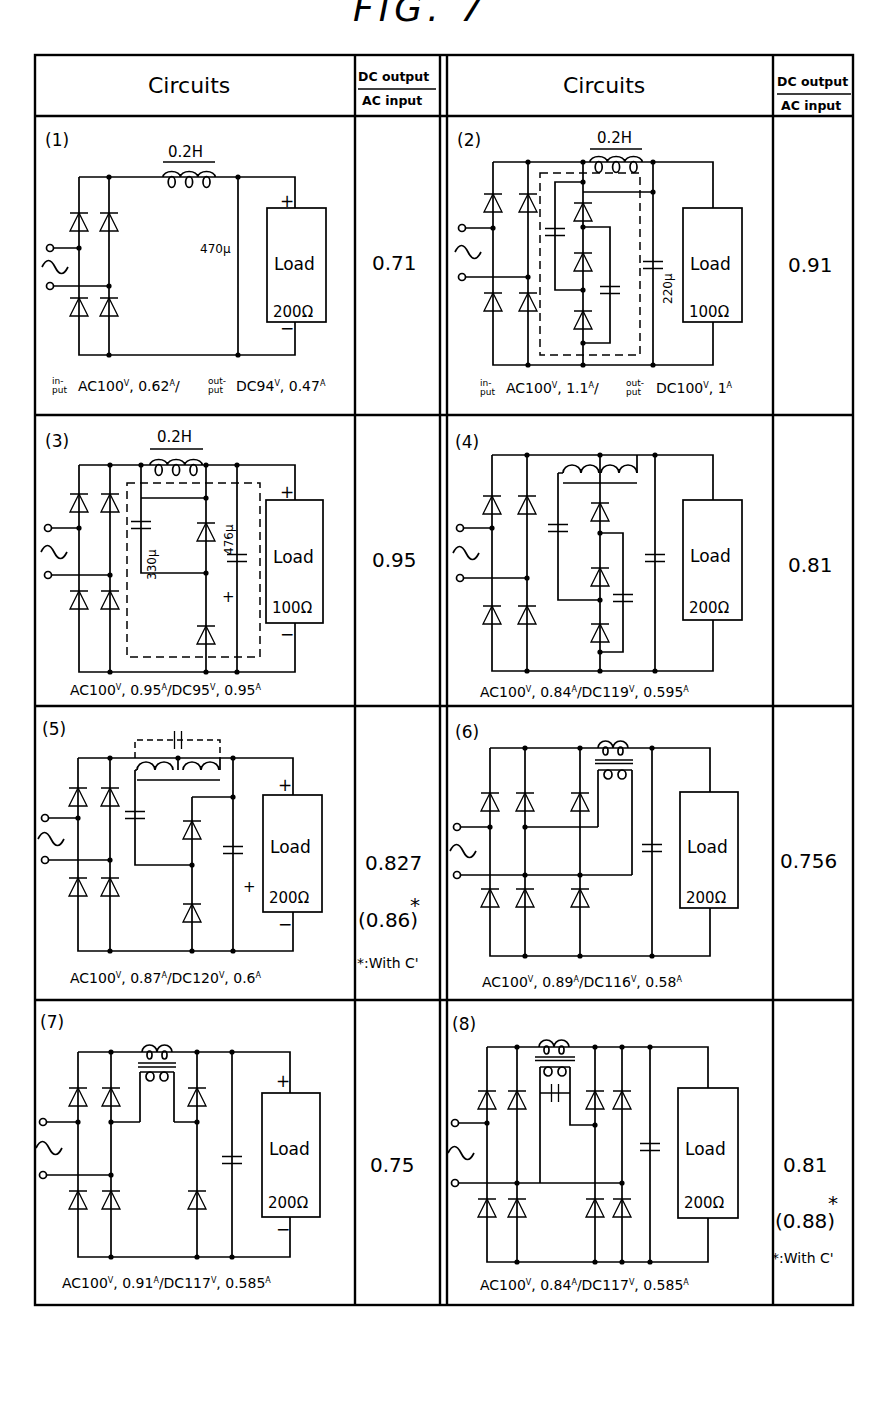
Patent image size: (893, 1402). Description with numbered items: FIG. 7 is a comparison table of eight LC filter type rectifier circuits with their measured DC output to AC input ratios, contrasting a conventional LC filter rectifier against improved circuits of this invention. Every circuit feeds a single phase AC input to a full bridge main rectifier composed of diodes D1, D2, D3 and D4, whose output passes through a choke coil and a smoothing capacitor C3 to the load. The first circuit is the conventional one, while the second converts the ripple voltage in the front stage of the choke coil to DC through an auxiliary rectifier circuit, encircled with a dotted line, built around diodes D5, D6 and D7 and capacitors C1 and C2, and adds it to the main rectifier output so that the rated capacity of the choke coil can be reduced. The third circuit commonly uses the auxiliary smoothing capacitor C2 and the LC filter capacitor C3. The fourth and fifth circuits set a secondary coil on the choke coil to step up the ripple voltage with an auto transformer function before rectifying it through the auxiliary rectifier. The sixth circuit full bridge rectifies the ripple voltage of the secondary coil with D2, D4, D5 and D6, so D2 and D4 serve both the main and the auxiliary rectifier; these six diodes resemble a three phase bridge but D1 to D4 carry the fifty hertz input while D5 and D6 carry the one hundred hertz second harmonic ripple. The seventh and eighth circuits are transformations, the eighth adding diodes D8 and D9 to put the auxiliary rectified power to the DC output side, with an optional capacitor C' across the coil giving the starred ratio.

The diode D1 is at (279, 641).
The diode D2 is at (319, 641).
The diode D3 is at (279, 769).
The diode D4 is at (319, 769).
The diode D5 is at (385, 778).
The diode D6 is at (400, 675).
The diode D7 is at (596, 354).
The diode D8 is at (629, 1222).
The diode D9 is at (629, 1088).
The capacitor C1 is at (353, 537).
The capacitor C2 is at (430, 584).
The capacitor C3 is at (446, 701).
The capacitor C' is at (350, 920).